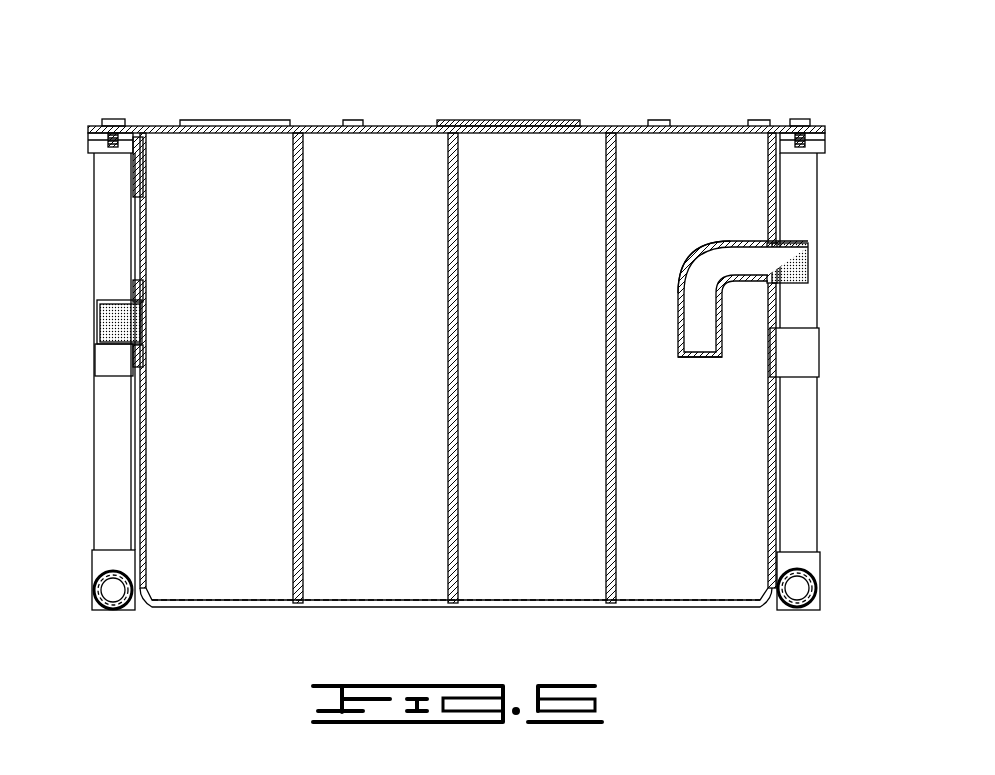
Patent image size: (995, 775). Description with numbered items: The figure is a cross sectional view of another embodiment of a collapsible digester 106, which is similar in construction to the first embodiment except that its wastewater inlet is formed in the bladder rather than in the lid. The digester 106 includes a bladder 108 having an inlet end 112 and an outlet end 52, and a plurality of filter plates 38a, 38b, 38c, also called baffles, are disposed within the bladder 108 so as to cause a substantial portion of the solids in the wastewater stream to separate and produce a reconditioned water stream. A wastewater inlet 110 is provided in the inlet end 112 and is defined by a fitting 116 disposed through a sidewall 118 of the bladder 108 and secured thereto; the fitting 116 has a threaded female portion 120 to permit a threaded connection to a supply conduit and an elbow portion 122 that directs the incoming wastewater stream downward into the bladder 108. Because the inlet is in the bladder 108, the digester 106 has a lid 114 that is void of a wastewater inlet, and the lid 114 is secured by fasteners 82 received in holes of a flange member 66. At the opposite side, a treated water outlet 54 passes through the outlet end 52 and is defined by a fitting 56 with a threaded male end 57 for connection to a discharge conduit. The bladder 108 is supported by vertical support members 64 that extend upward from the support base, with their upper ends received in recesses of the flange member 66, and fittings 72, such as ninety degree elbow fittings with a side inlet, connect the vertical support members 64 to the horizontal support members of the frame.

The collapsible digester 106 is at (307, 84).
The fastener 82 is at (112, 118).
The lid 114 is at (720, 127).
The flange member 66 is at (826, 132).
The inlet end 112 is at (816, 194).
The fitting 116 is at (806, 250).
The threaded female portion 120 is at (810, 265).
The wastewater inlet 110 is at (735, 242).
The elbow portion 122 is at (710, 272).
The sidewall 118 is at (730, 340).
The bladder 108 is at (778, 403).
The vertical support member 64 is at (818, 460).
The fitting 72 is at (822, 587).
The treated water outlet 54 is at (122, 301).
The threaded male end 57 is at (108, 322).
The fitting 56 is at (120, 345).
The outlet end 52 is at (134, 428).
The filter plate 38a is at (616, 470).
The filter plate 38b is at (458, 471).
The filter plate 38c is at (303, 443).